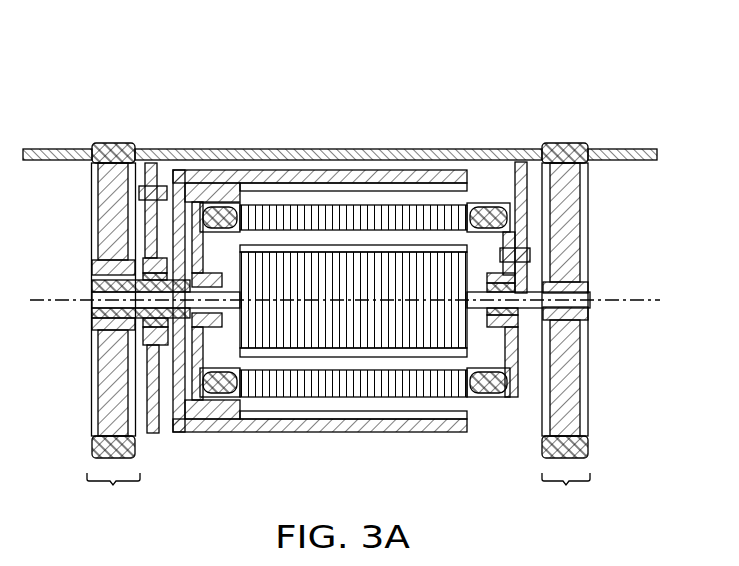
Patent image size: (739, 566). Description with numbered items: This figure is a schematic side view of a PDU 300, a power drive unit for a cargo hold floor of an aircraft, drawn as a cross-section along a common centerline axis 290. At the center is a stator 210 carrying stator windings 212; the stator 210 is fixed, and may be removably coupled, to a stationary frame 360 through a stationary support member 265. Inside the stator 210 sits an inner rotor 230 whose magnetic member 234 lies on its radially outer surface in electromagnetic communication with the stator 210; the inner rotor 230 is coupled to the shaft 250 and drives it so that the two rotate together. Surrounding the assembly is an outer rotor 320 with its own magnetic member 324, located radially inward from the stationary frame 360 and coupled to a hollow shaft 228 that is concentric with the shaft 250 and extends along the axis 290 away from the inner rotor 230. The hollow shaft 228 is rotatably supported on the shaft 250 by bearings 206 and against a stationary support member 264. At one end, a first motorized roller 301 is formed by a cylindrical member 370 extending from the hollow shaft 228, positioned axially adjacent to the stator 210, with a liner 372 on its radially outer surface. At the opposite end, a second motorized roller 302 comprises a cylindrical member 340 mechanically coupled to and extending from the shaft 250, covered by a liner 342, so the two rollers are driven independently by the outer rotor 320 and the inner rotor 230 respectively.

The PDU 300 is at (540, 65).
The stationary frame 360 is at (623, 157).
The axis 290 is at (635, 302).
The liner 372 is at (112, 143).
The cylindrical member 370 is at (115, 187).
The hollow shaft 228 is at (98, 320).
The bearings 206 is at (153, 284).
The stationary support member 264 is at (148, 230).
The outer rotor 320 is at (300, 172).
The magnetic member 324 is at (320, 185).
The stator 210 is at (275, 217).
The stator windings 212 is at (220, 208).
The inner rotor 230 is at (330, 267).
The magnetic member 234 is at (372, 248).
The shaft 250 is at (585, 296).
The stationary support member 265 is at (520, 190).
The liner 342 is at (567, 150).
The cylindrical member 340 is at (570, 212).
The first motorized roller 301 is at (113, 493).
The second motorized roller 302 is at (566, 493).